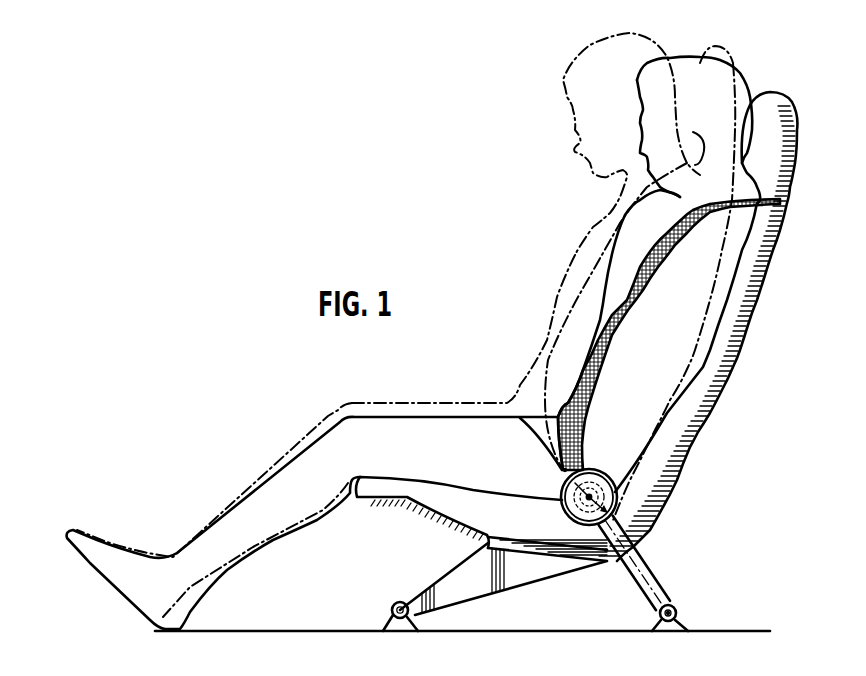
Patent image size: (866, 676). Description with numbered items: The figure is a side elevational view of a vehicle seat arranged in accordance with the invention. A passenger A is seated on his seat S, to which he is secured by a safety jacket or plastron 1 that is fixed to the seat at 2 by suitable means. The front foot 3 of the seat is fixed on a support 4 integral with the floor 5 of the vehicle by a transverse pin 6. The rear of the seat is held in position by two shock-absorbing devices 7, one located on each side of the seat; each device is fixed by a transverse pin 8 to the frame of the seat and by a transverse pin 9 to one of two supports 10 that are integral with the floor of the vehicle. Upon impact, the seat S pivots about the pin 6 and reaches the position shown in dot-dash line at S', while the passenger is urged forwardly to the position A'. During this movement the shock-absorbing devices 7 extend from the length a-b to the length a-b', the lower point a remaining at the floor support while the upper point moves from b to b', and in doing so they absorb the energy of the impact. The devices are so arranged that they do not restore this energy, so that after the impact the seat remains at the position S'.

The safety jacket or plastron 1 is at (577, 398).
The fixing point of the plastron 2 is at (588, 466).
The front foot of the seat 3 is at (513, 560).
The support 4 is at (385, 620).
The floor of the vehicle 5 is at (513, 631).
The transverse pin 6 is at (398, 602).
The shock-absorbing device 7 is at (637, 566).
The transverse pin 8 is at (620, 501).
The transverse pin 9 is at (676, 607).
The support 10 is at (688, 621).
The point a is at (661, 615).
The point b is at (564, 514).
The point b' is at (540, 465).
The passenger A is at (414, 343).
The forward position of the passenger A' is at (388, 325).
The seat S is at (707, 326).
The pivoted position of the seat S' is at (728, 284).